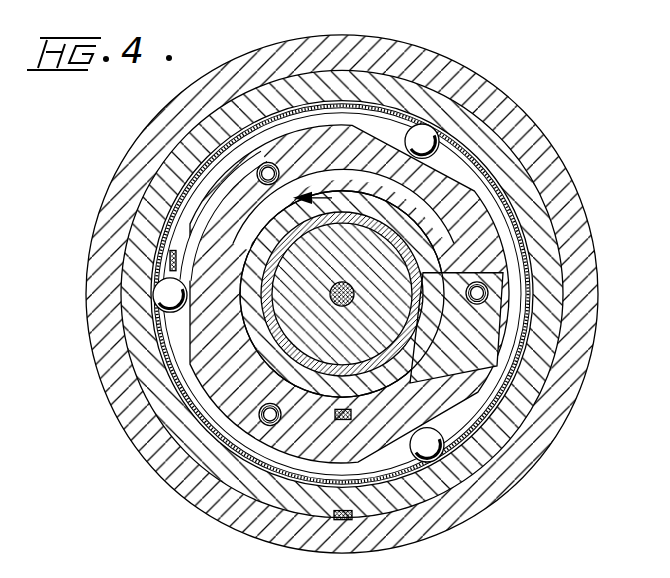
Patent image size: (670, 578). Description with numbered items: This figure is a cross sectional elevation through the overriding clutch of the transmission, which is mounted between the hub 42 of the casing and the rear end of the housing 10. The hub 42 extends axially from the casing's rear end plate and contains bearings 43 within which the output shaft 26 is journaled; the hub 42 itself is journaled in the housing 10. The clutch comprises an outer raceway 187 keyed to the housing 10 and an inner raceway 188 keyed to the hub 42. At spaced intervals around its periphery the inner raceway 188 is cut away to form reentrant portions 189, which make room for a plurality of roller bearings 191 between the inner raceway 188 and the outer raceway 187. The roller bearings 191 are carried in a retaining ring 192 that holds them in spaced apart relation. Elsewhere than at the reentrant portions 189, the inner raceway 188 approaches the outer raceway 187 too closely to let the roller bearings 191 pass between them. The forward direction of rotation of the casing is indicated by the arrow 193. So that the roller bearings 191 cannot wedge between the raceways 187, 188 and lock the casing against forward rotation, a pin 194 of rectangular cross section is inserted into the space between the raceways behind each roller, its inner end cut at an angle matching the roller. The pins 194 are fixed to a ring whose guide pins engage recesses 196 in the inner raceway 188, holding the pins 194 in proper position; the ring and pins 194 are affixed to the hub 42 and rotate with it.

The housing 10 is at (399, 54).
The output shaft 26 is at (387, 260).
The hub 42 is at (455, 318).
The bearings 43 is at (463, 270).
The raceway 187 is at (488, 160).
The raceway 188 is at (514, 160).
The reentrant portions 189 is at (388, 200).
The roller bearings 191 is at (462, 192).
The retaining ring 192 is at (507, 223).
The arrow 193 is at (340, 193).
The pin 194 is at (172, 262).
The recesses 196 is at (489, 292).